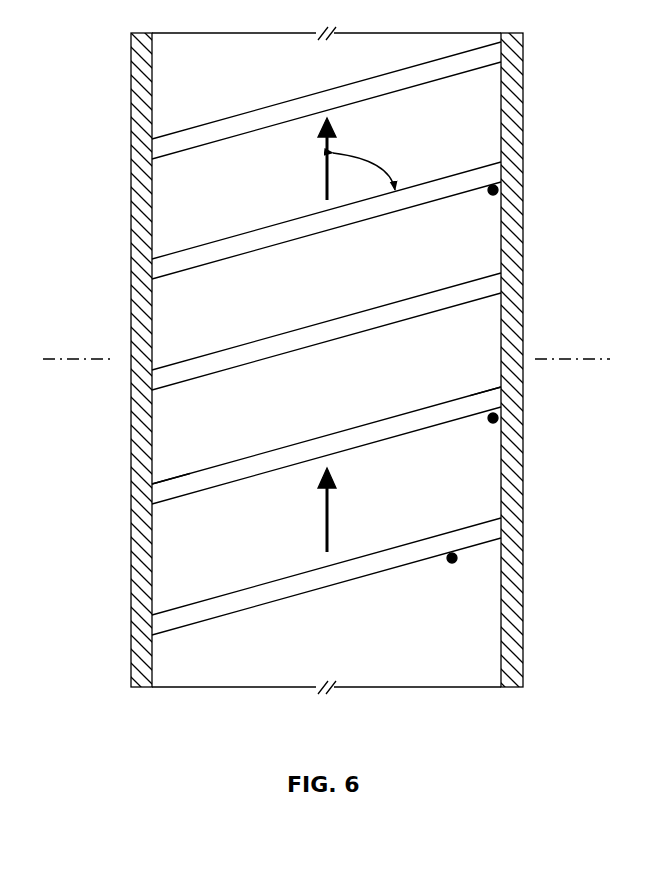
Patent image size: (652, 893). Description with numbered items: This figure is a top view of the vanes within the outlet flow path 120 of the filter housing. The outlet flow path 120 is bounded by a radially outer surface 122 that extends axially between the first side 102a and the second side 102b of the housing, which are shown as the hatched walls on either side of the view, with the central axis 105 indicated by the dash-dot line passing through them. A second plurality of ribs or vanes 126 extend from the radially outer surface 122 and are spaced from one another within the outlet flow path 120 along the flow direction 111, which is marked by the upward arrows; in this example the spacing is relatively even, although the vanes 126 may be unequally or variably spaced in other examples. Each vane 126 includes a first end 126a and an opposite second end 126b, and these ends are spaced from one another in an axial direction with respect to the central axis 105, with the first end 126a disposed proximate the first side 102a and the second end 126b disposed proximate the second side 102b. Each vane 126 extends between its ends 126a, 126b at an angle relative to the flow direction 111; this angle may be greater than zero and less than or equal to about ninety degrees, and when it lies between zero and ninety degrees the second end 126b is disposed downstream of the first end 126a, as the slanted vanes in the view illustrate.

The first side 102a is at (92, 360).
The second side 102b is at (524, 278).
The central axis 105 is at (558, 360).
The flow direction 111 is at (324, 172).
The outlet flow path 120 is at (559, 360).
The radially outer surface 122 is at (159, 85).
The vanes 126 is at (312, 92).
The first end 126a is at (156, 481).
The second end 126b is at (495, 385).